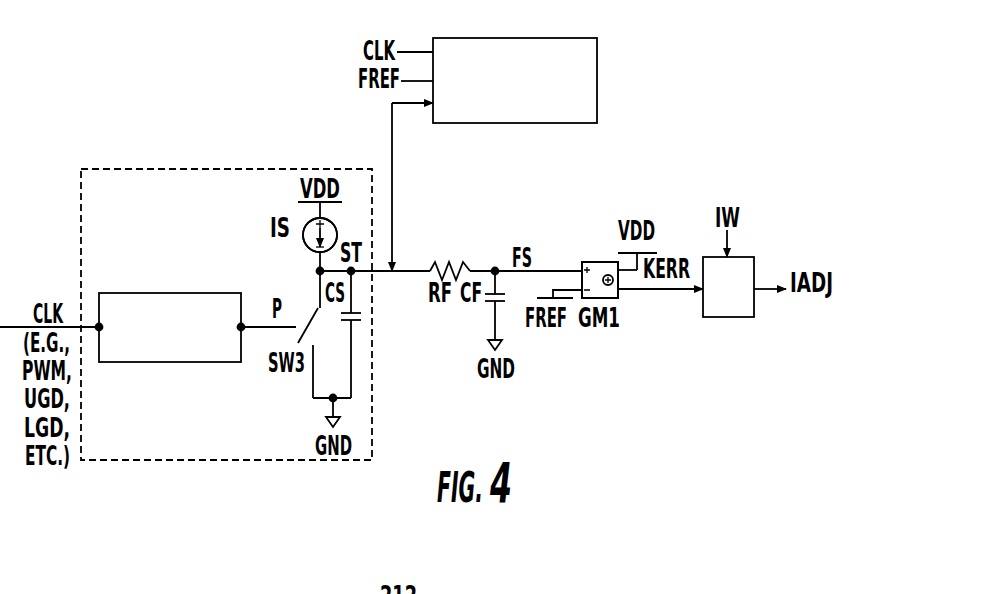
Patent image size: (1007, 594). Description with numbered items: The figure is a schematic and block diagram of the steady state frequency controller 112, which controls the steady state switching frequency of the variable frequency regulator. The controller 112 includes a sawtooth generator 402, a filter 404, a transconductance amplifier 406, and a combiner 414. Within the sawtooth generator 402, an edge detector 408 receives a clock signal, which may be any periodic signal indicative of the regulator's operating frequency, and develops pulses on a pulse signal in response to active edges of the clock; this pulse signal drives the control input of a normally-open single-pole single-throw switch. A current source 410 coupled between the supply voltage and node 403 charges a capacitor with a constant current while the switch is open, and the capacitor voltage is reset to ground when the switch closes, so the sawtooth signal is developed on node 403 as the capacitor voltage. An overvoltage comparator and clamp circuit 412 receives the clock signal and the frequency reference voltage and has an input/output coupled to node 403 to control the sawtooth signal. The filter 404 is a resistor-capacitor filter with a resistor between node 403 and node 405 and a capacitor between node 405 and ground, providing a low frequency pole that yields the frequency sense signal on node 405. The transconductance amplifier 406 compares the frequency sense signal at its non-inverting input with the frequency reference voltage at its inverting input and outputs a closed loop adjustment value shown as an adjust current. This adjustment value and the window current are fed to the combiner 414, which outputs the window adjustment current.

The steady state frequency controller 112 is at (685, 113).
The sawtooth generator 402 is at (135, 439).
The node 403 is at (412, 269).
The filter 404 is at (468, 321).
The node 405 is at (496, 268).
The transconductance amplifier 406 is at (593, 262).
The edge detector 408 is at (197, 293).
The current source 410 is at (307, 224).
The overvoltage comparator and clamp circuit 412 is at (597, 73).
The combiner 414 is at (745, 295).